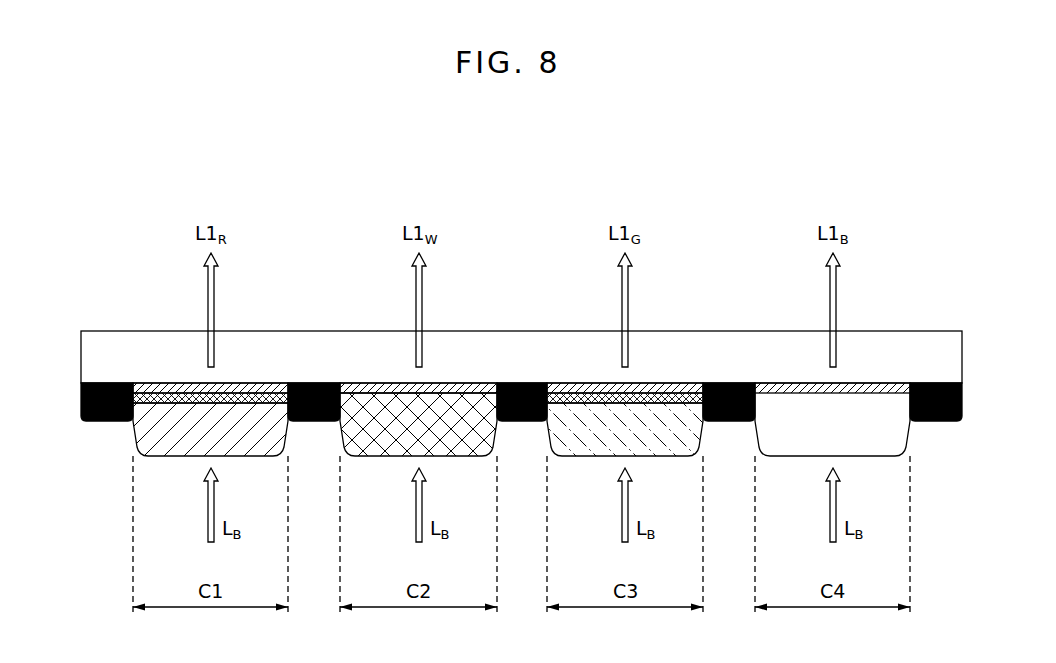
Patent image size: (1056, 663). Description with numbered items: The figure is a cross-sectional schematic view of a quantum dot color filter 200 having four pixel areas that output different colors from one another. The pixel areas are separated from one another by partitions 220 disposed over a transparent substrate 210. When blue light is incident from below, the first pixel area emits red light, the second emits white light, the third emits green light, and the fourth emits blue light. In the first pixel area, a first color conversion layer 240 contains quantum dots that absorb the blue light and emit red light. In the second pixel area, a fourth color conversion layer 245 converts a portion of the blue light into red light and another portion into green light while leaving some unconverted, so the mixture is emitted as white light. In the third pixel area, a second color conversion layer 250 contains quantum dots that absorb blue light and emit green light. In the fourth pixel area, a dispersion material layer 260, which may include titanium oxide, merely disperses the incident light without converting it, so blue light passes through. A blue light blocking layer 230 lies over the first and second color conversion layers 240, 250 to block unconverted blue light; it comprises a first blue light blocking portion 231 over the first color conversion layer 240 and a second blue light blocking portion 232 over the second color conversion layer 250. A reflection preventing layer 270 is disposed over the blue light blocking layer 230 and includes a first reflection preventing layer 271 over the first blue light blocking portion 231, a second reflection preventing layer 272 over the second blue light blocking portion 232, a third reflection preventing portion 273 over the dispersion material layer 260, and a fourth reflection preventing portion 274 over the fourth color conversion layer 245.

The quantum dot color filter 200 is at (83, 267).
The transparent substrate 210 is at (962, 361).
The partitions 220 is at (962, 403).
The blue light blocking layer 230 is at (393, 346).
The first blue light blocking portion 231 is at (158, 398).
The second blue light blocking portion 232 is at (579, 398).
The first color conversion layer 240 is at (178, 447).
The fourth color conversion layer 245 is at (385, 447).
The second color conversion layer 250 is at (590, 447).
The dispersion material layer 260 is at (798, 452).
The reflection preventing layer 270 is at (556, 340).
The first reflection preventing layer 271 is at (254, 388).
The second reflection preventing layer 272 is at (670, 388).
The third reflection preventing portion 273 is at (785, 388).
The fourth reflection preventing portion 274 is at (458, 388).